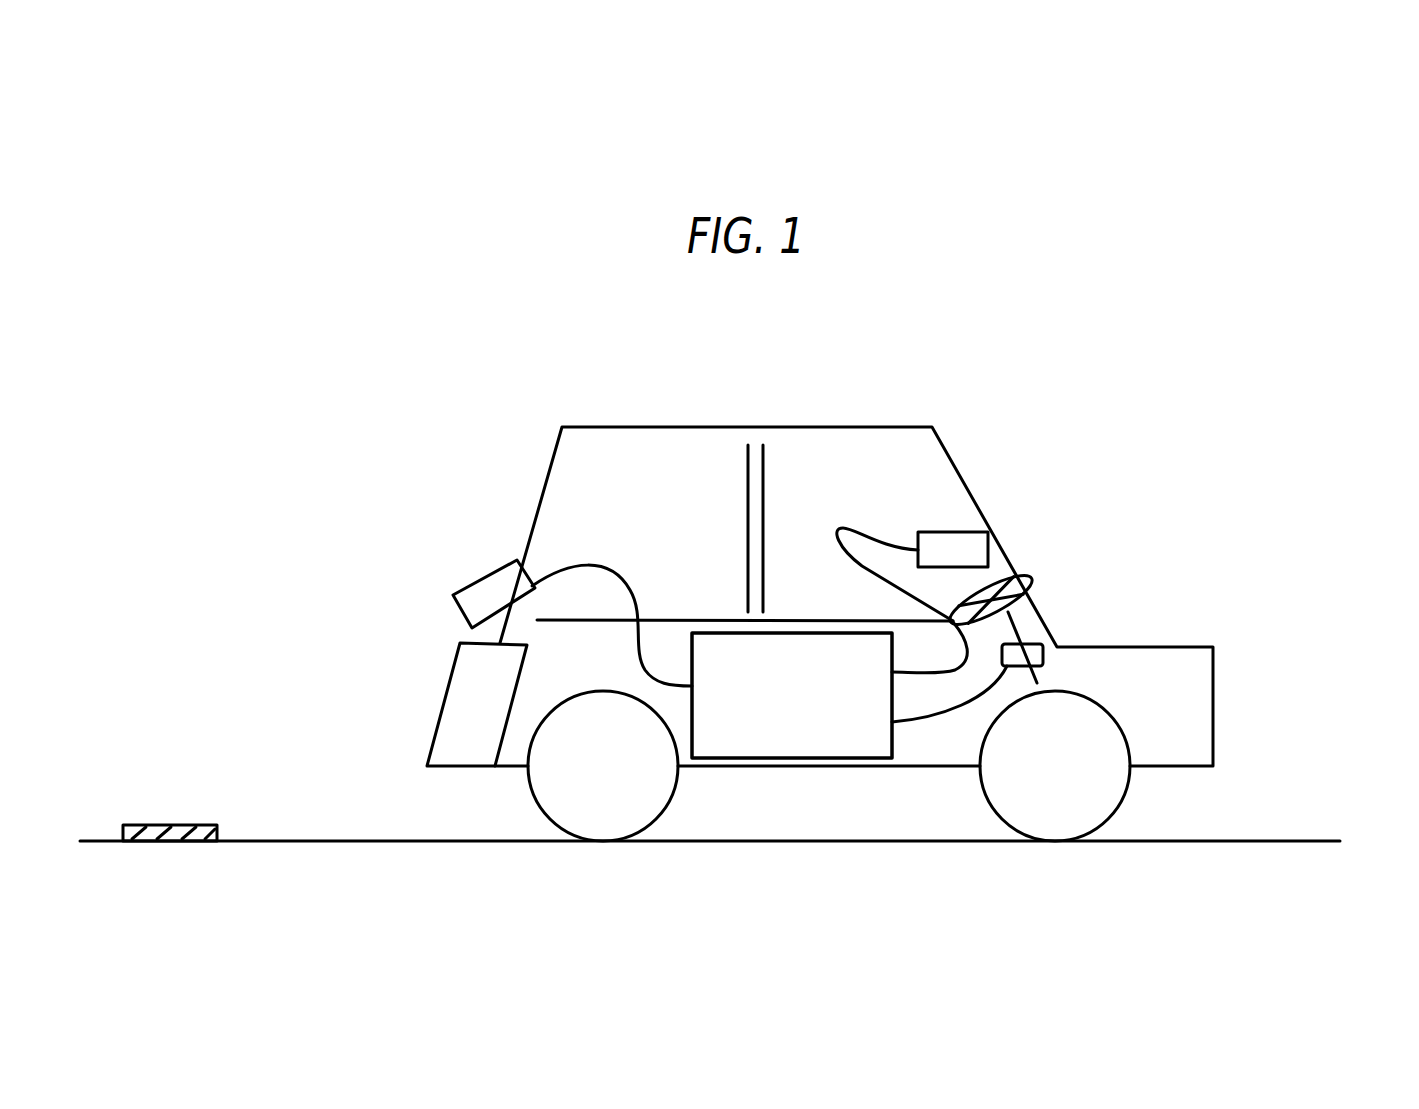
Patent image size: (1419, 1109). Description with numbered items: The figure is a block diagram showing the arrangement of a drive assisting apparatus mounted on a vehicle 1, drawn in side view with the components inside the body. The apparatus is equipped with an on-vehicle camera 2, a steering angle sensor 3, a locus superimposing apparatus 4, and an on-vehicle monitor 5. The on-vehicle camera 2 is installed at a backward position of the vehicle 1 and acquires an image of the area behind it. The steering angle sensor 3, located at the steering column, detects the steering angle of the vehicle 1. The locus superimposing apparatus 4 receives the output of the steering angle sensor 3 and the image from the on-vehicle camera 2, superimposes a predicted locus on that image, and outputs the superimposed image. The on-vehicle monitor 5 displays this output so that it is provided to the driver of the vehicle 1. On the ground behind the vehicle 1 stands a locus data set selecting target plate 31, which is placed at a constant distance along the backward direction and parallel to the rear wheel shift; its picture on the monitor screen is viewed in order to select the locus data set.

The vehicle 1 is at (1213, 668).
The on-vehicle camera 2 is at (512, 562).
The steering angle sensor 3 is at (1047, 628).
The locus superimposing apparatus 4 is at (790, 633).
The on-vehicle monitor 5 is at (957, 530).
The locus data set selecting target plate 31 is at (150, 825).